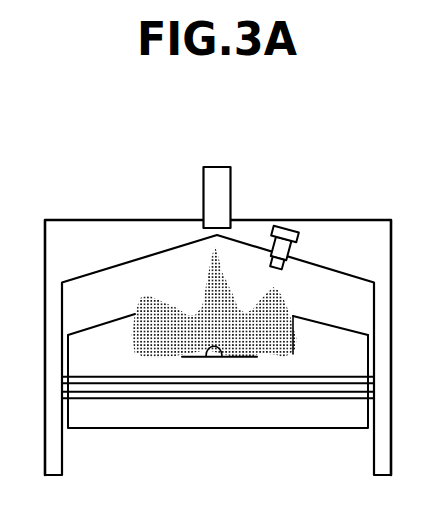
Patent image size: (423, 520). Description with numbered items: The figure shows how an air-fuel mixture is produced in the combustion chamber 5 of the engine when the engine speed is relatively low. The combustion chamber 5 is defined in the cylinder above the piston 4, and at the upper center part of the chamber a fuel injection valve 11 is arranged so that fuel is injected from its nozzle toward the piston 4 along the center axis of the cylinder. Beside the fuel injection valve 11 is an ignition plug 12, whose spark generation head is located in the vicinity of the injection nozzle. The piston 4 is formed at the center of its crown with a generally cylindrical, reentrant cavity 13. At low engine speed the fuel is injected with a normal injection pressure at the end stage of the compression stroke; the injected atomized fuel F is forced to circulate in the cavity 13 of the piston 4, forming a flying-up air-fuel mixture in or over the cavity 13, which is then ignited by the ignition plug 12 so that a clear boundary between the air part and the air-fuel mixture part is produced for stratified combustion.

The piston 4 is at (298, 418).
The combustion chamber 5 is at (92, 292).
The fuel injection valve 11 is at (217, 165).
The ignition plug 12 is at (283, 227).
The cavity 13 is at (205, 356).
The injected atomized fuel F is at (208, 288).